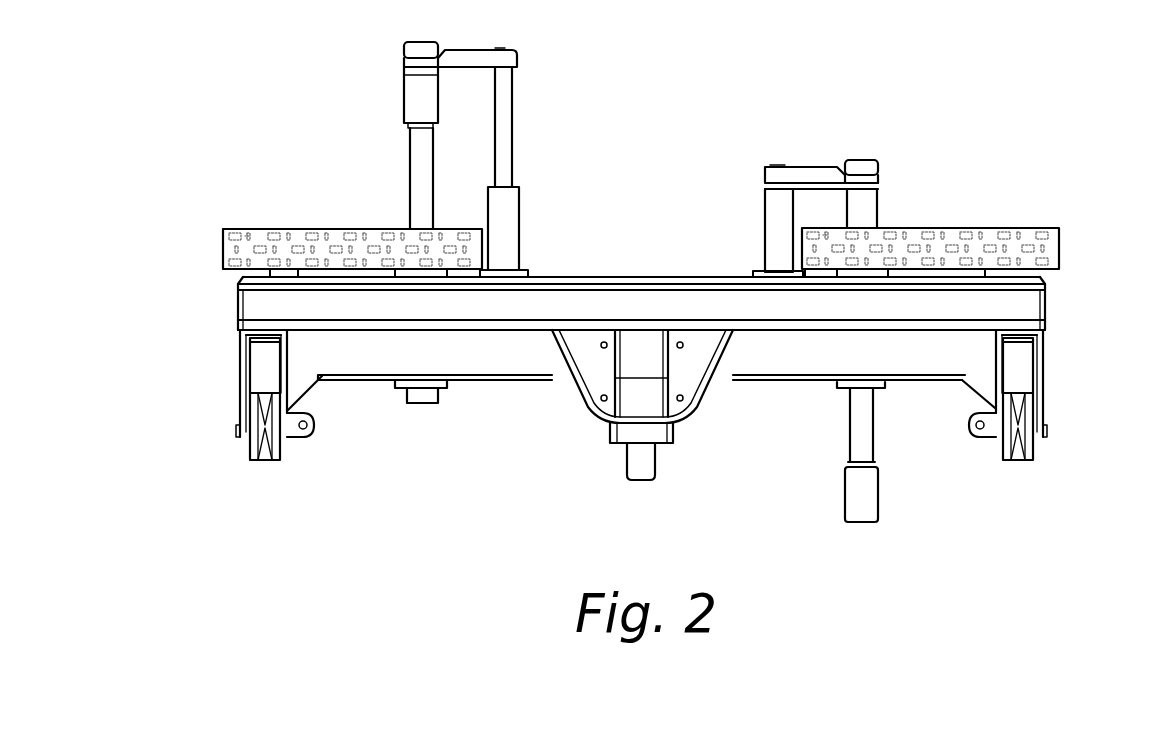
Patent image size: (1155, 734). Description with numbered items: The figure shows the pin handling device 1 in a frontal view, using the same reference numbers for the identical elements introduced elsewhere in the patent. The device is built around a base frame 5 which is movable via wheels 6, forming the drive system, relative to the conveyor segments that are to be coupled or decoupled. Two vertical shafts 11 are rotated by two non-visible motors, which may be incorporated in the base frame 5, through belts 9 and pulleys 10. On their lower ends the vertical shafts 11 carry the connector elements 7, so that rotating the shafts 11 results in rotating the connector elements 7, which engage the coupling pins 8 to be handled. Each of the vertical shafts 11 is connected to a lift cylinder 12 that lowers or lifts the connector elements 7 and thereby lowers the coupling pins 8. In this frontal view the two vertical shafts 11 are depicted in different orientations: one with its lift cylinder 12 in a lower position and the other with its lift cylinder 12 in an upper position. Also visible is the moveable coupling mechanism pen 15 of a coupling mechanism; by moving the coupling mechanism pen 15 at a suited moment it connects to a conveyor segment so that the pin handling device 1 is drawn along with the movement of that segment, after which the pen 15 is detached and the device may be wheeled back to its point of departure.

The pin handling device 1 is at (214, 178).
The base frame 5 is at (515, 366).
The wheels 6 is at (247, 447).
The connector elements 7 is at (882, 462).
The coupling pins 8 is at (423, 395).
The belts 9 is at (312, 228).
The pulleys 10 is at (222, 250).
The vertical shafts 11 is at (420, 165).
The lift cylinder 12 is at (506, 130).
The coupling mechanism pen 15 is at (637, 460).